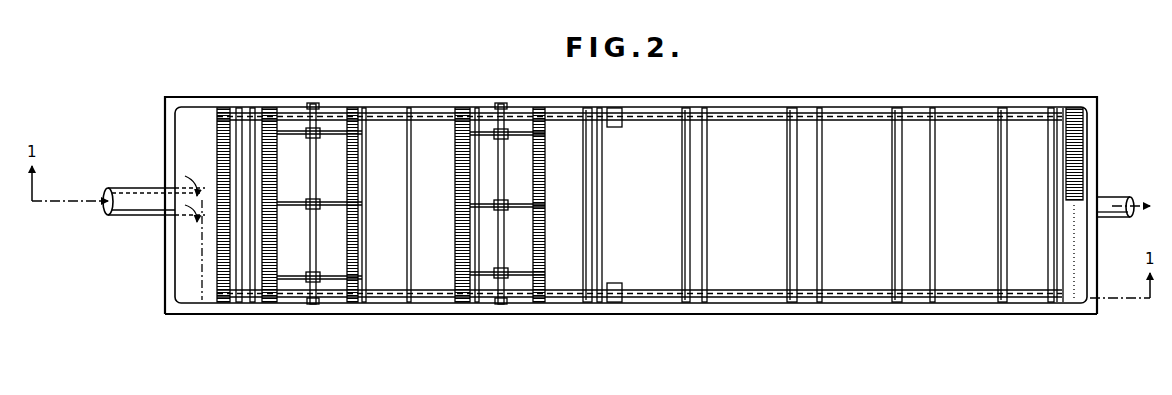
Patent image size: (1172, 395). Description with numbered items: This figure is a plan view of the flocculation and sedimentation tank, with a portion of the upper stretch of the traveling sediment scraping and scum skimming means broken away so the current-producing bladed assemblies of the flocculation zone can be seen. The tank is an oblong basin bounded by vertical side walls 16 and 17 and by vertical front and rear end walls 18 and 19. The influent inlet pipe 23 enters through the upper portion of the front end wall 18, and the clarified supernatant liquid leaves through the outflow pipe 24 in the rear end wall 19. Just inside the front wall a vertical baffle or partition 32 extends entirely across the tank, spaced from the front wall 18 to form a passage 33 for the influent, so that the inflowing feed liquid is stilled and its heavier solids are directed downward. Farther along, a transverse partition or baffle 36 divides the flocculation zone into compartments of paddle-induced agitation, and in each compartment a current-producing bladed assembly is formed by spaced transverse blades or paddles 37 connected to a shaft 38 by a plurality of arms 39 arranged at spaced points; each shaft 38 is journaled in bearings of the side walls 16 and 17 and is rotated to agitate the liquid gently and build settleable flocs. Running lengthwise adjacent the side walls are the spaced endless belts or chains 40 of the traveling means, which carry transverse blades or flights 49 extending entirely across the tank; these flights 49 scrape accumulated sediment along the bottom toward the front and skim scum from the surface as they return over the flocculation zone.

The vertical side wall 16 is at (490, 97).
The vertical side wall 17 is at (534, 311).
The front end wall 18 is at (172, 148).
The rear end wall 19 is at (1090, 262).
The influent inlet pipe 23 is at (151, 213).
The outflow pipe 24 is at (1108, 203).
The vertical baffle or partition 32 is at (217, 278).
The influent passage 33 is at (192, 261).
The transverse partition or baffle 36 is at (408, 185).
The blades or paddles 37 is at (352, 258).
The shaft 38 is at (313, 168).
The arms 39 is at (337, 205).
The endless belts or chains 40 is at (737, 113).
The transverse blades or flights 49 is at (792, 215).